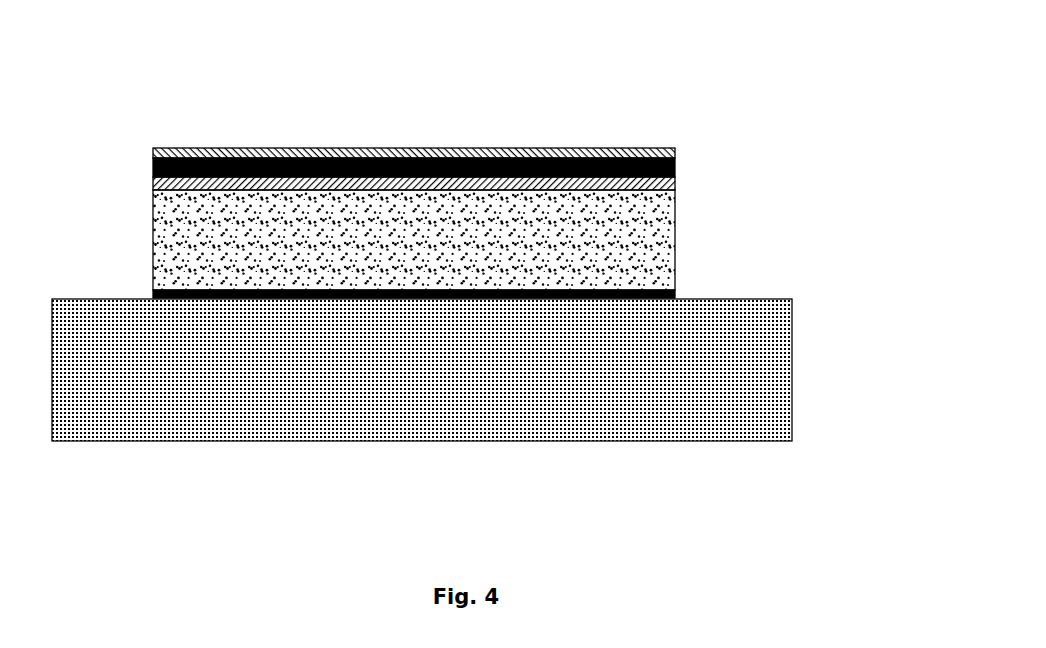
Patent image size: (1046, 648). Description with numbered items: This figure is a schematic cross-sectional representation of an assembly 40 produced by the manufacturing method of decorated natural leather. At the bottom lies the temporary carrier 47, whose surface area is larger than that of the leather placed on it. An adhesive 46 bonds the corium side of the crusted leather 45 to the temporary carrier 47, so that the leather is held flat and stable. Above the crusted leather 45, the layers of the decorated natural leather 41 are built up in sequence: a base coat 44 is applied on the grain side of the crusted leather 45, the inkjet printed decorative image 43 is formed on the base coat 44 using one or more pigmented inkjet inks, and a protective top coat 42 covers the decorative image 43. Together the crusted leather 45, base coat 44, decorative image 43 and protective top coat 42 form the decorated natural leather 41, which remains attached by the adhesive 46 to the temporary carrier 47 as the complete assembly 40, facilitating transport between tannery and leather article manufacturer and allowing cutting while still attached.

The assembly 40 is at (465, 286).
The decorated natural leather 41 is at (530, 177).
The protective top coat 42 is at (640, 148).
The decorative image 43 is at (660, 175).
The base coat 44 is at (675, 186).
The crusted leather 45 is at (481, 240).
The adhesive 46 is at (153, 293).
The temporary carrier 47 is at (370, 425).